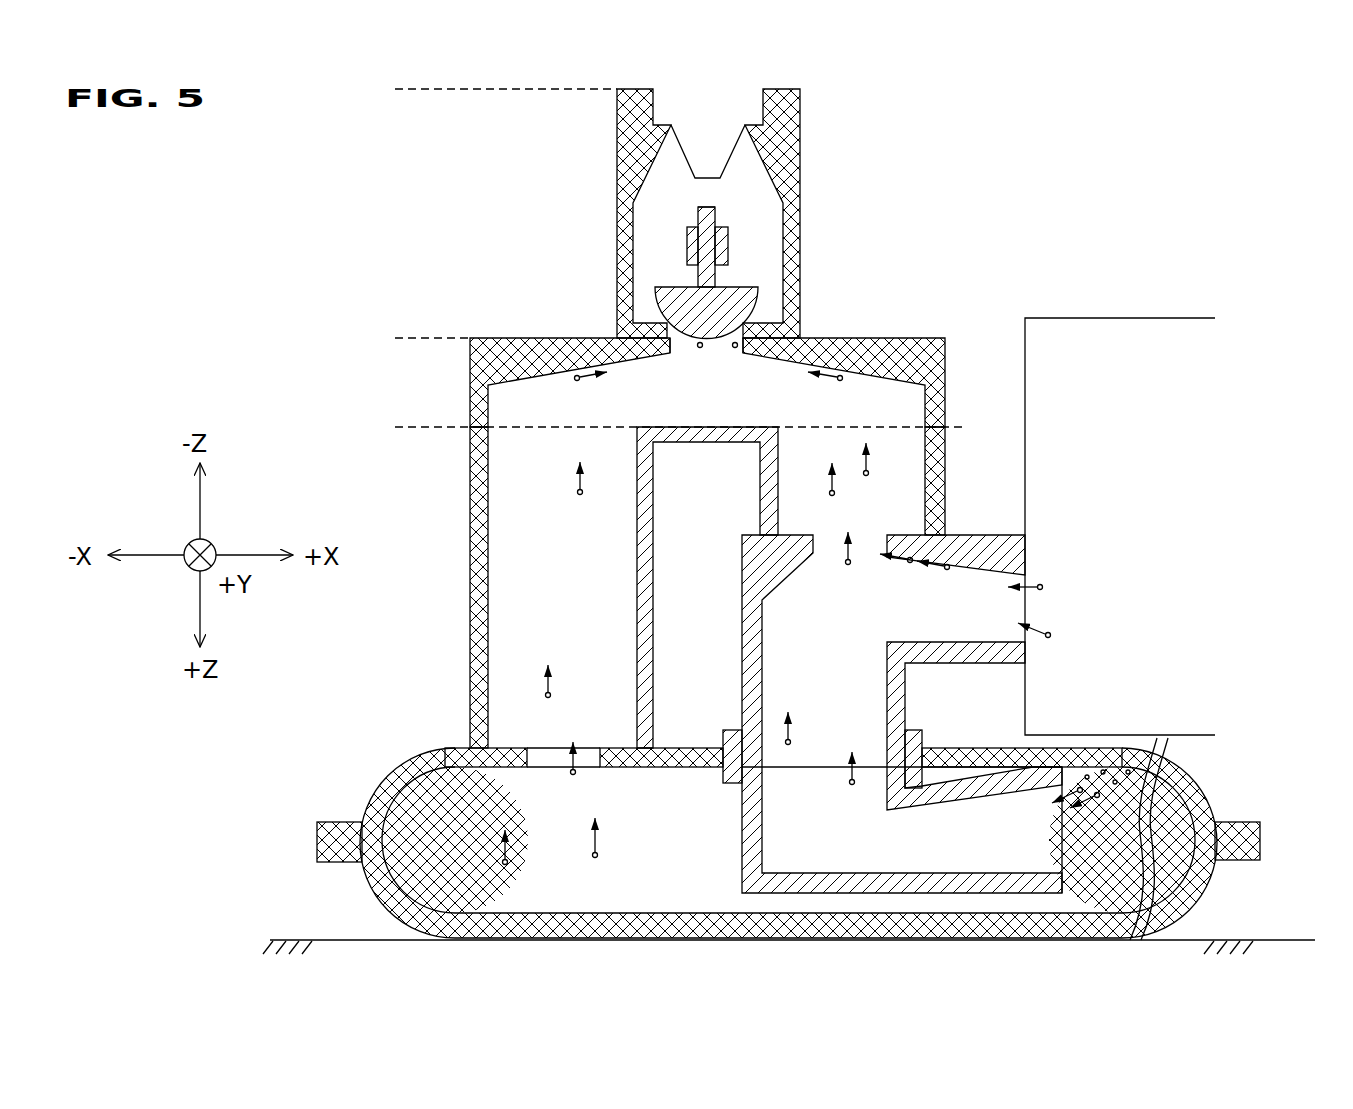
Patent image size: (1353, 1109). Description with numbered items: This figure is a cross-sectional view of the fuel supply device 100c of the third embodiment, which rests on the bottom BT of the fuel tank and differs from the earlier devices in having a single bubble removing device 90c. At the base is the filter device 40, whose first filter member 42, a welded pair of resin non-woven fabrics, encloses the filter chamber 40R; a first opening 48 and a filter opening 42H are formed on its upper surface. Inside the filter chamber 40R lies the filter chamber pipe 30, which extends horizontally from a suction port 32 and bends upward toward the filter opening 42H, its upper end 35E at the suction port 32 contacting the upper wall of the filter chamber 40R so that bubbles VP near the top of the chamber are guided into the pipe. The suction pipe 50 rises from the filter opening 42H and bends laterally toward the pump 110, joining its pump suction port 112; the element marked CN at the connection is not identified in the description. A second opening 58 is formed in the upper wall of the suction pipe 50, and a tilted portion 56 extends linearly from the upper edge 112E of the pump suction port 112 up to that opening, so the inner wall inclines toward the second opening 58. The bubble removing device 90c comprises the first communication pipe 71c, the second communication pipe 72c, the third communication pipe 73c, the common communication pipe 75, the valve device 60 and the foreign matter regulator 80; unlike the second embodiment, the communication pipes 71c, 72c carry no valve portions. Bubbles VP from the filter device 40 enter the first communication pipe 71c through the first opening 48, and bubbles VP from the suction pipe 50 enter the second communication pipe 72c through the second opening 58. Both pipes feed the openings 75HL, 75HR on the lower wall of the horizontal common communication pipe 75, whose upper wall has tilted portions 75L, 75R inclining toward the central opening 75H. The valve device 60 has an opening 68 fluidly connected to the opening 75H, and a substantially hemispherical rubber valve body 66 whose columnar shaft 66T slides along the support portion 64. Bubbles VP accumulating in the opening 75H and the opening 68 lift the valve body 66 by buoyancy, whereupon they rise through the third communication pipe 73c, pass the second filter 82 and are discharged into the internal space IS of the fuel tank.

The internal space IS is at (260, 158).
The third communication pipe 73c is at (447, 89).
The foreign matter regulator 80 is at (758, 213).
The second filter 82 is at (713, 140).
The valve device 60 is at (742, 236).
The support portion 64 is at (717, 268).
The columnar shaft 66T is at (700, 207).
The valve body 66 is at (757, 300).
The common communication pipe 75 is at (447, 338).
The tilted portion 75L is at (536, 384).
The tilted portion 75R is at (866, 382).
The opening 75H is at (670, 348).
The opening 68 is at (727, 348).
The opening 75HL is at (527, 426).
The opening 75HR is at (787, 426).
The first communication pipe 71c is at (447, 427).
The second communication pipe 72c is at (958, 427).
The suction pipe 50 is at (768, 594).
The tilted portion 56 is at (990, 575).
The second opening 58 is at (828, 558).
The upper edge 112E is at (1030, 578).
The pump 110 is at (1118, 318).
The pump suction port 112 is at (1012, 652).
The filter opening 42H is at (893, 735).
The suction port 32 is at (1050, 843).
The filter chamber pipe 30 is at (740, 892).
The upper end 35E is at (1082, 768).
The filter device 40 is at (342, 786).
The filter chamber 40R is at (462, 853).
The first filter member 42 is at (445, 748).
The first opening 48 is at (540, 768).
The connector CN is at (742, 800).
The bubbles VP is at (592, 858).
The bottom BT is at (1268, 940).
The fuel supply device 100c is at (1158, 158).
The bubble removing device 90c is at (963, 283).